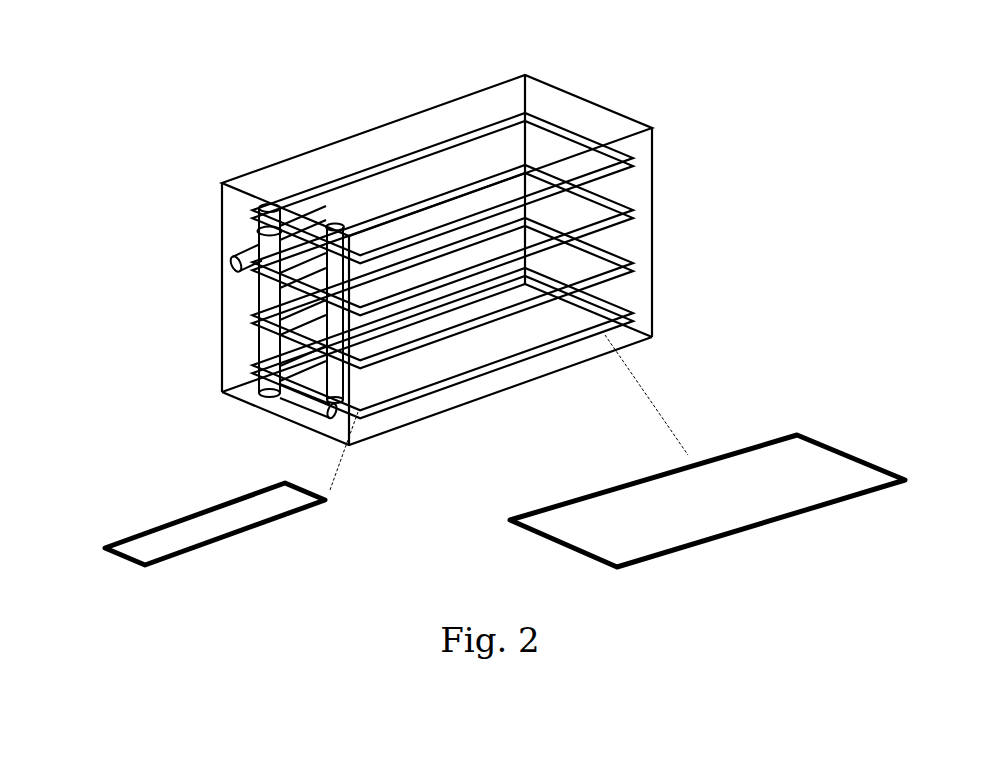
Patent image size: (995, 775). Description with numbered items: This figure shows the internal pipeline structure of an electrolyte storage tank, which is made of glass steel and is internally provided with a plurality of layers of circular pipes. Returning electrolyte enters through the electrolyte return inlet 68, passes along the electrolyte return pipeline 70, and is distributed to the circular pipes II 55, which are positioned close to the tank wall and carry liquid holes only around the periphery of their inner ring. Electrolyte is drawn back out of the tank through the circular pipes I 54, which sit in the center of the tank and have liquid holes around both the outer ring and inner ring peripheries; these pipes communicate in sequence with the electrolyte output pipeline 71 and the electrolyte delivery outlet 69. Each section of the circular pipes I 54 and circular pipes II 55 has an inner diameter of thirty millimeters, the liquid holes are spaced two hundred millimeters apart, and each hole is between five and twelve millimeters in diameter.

The circular pipe I 54 is at (215, 536).
The circular pipe II 55 is at (707, 504).
The electrolyte return opening 68 is at (235, 262).
The electrolyte delivery outlet 69 is at (265, 385).
The electrolyte return pipeline 70 is at (265, 347).
The electrolyte output pipeline 71 is at (333, 340).